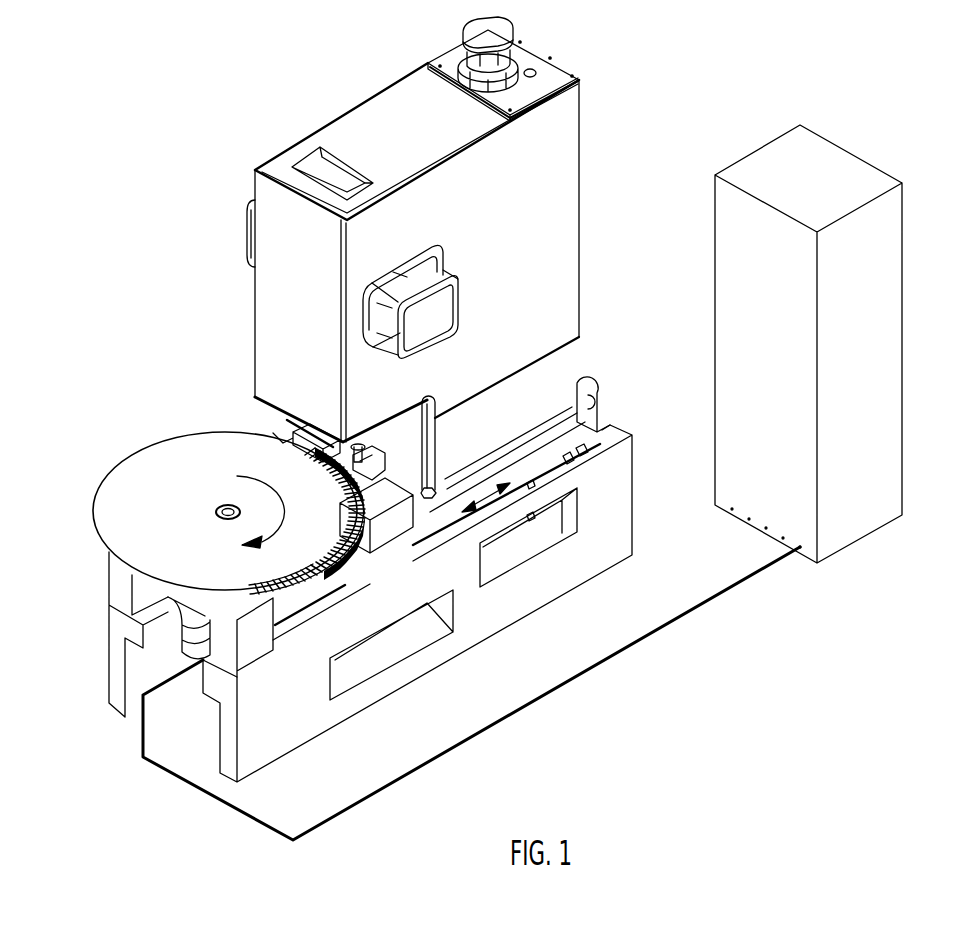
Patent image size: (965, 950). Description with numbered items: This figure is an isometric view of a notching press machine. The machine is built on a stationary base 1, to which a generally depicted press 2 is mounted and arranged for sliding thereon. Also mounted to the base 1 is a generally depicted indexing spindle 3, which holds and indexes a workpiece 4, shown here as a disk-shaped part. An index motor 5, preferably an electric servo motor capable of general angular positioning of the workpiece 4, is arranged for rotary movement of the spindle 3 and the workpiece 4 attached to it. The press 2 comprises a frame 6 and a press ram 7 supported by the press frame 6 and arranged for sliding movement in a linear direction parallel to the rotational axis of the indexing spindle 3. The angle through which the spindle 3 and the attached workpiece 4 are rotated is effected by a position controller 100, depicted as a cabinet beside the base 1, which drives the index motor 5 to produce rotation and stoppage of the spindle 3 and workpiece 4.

The stationary base 1 is at (603, 661).
The press 2 is at (556, 212).
The indexing spindle 3 is at (216, 513).
The workpiece 4 is at (128, 449).
The index motor 5 is at (109, 703).
The frame 6 is at (253, 317).
The press ram 7 is at (293, 430).
The position controller 100 is at (873, 330).